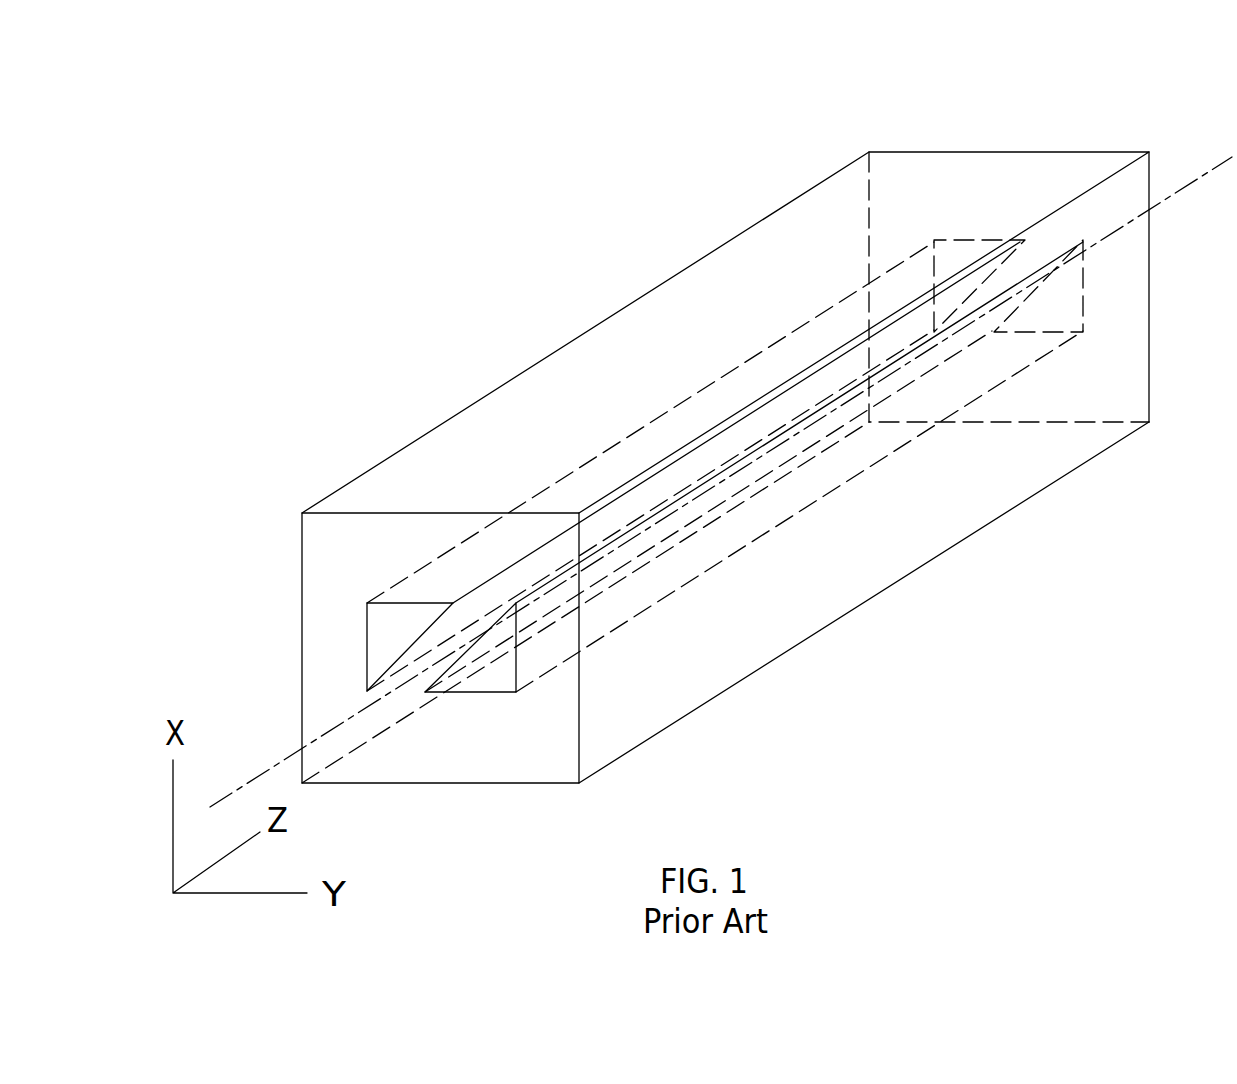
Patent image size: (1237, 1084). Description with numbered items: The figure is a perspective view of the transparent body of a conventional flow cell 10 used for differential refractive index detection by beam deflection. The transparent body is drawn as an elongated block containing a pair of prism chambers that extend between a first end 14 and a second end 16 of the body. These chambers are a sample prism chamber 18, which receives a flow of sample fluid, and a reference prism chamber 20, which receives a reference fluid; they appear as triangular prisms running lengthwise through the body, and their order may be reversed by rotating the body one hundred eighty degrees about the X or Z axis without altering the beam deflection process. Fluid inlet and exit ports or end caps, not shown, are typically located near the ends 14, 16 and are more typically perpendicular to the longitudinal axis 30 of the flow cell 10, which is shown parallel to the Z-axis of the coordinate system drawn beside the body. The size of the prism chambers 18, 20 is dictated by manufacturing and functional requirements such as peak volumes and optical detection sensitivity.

The conventional flow cell 10 is at (481, 245).
The first end 14 is at (438, 783).
The second end 16 is at (997, 153).
The sample prism chamber 18 is at (383, 630).
The reference prism chamber 20 is at (499, 672).
The longitudinal axis 30 is at (1210, 170).